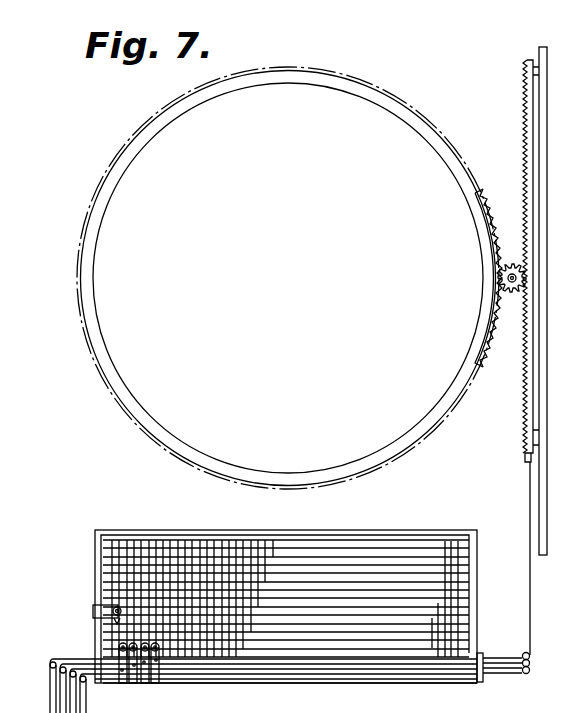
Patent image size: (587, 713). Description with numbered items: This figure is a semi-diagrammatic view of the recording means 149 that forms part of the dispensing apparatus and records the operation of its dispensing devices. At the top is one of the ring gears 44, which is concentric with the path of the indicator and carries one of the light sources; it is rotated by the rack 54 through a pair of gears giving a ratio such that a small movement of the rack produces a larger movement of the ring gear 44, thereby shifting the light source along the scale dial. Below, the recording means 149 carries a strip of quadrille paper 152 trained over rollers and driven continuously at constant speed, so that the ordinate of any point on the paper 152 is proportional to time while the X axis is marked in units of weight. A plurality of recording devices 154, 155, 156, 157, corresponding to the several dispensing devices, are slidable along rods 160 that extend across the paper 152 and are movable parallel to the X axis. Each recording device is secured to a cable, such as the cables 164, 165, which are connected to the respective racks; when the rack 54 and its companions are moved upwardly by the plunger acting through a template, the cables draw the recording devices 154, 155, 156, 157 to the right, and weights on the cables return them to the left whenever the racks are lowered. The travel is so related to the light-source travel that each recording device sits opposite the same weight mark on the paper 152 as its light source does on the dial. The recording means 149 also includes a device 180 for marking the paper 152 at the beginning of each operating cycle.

The ring gear 44 is at (480, 250).
The rack 54 is at (531, 206).
The recording means 149 is at (400, 522).
The quadrille paper 152 is at (443, 552).
The recording device 154 is at (121, 684).
The recording device 155 is at (134, 684).
The recording device 156 is at (146, 684).
The recording device 157 is at (160, 684).
The rods 160 is at (376, 682).
The cable 164 is at (100, 700).
The cable 165 is at (79, 691).
The marking device 180 is at (100, 612).